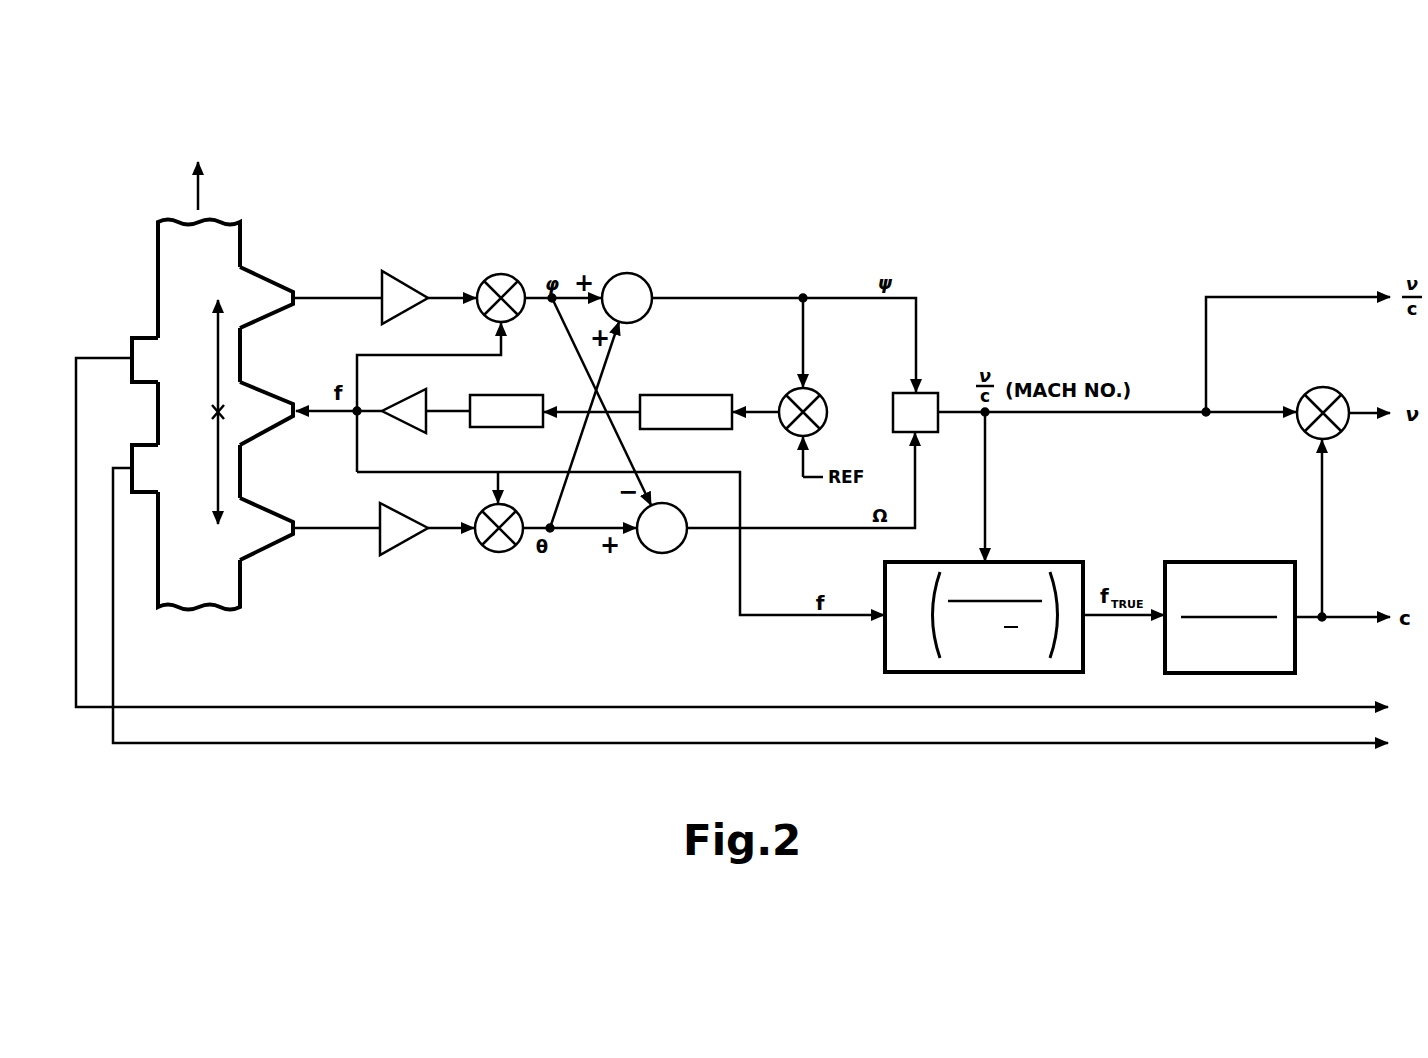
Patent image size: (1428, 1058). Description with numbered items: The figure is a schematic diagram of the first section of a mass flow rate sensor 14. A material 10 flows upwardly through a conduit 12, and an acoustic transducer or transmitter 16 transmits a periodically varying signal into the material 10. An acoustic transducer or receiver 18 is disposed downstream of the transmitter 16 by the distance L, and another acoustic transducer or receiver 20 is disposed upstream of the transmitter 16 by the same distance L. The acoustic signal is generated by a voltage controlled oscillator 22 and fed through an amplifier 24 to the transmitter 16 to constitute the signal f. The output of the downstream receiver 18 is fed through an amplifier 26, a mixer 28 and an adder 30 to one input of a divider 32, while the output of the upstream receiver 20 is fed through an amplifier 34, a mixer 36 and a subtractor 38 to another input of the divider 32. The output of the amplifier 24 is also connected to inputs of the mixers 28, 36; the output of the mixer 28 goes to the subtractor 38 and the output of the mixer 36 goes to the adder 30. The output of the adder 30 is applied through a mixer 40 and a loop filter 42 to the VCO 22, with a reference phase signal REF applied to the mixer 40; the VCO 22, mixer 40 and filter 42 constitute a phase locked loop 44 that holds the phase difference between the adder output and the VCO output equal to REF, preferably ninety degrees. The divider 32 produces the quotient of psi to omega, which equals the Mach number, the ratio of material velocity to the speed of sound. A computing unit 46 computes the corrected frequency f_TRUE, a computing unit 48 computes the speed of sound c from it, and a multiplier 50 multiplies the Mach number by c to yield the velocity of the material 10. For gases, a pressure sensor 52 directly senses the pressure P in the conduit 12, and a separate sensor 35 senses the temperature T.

The material 10 is at (181, 580).
The conduit 12 is at (158, 242).
The sensor 14 is at (363, 240).
The acoustic transducer or transmitter 16 is at (258, 393).
The acoustic transducer or receiver 18 is at (259, 273).
The acoustic transducer or receiver 20 is at (258, 506).
The voltage controlled oscillator 22 is at (522, 395).
The amplifier 24 is at (410, 389).
The amplifier 26 is at (405, 281).
The mixer 28 is at (496, 273).
The adder 30 is at (627, 273).
The divider 32 is at (935, 392).
The amplifier 34 is at (402, 549).
The sensor 35 is at (140, 445).
The mixer 36 is at (498, 553).
The subtractor 38 is at (662, 553).
The mixer 40 is at (825, 396).
The loop filter 42 is at (668, 395).
The phase locked loop 44 is at (708, 268).
The computing unit 46 is at (1040, 562).
The computing unit 48 is at (1230, 562).
The multiplier 50 is at (1322, 387).
The pressure sensor 52 is at (137, 337).